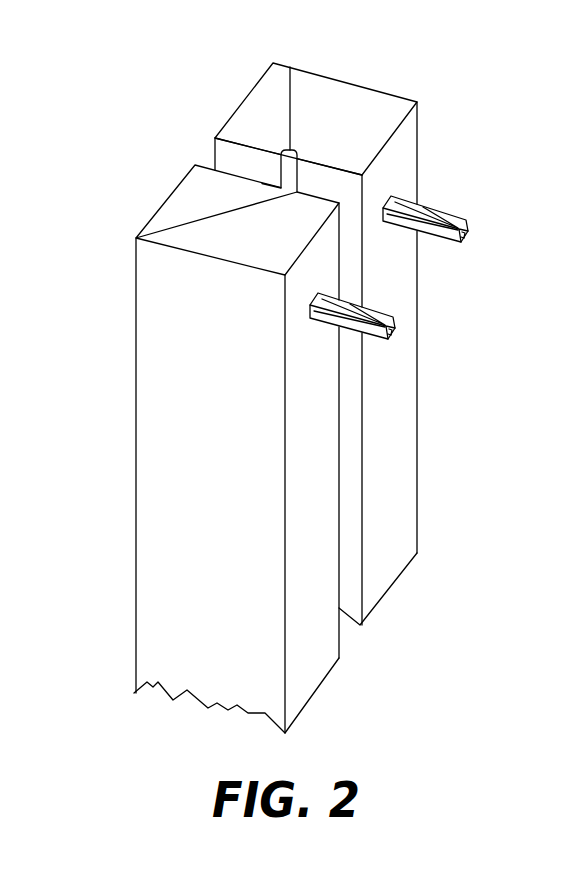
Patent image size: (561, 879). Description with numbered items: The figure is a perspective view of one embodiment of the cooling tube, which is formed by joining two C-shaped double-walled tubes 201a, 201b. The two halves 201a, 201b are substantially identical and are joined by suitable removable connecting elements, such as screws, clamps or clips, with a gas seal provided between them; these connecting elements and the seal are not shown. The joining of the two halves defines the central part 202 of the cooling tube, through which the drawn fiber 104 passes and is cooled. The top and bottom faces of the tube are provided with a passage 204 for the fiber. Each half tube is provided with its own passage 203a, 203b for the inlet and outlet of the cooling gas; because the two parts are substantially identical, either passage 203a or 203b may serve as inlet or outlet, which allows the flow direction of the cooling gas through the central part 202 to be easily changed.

The drawn fiber 104 is at (290, 105).
The C-shaped double-walled tube 201a is at (313, 668).
The C-shaped double-walled tube 201b is at (390, 570).
The central part 202 is at (281, 168).
The passage 203a is at (396, 328).
The passage 203b is at (468, 232).
The passage for the fiber 204 is at (281, 186).